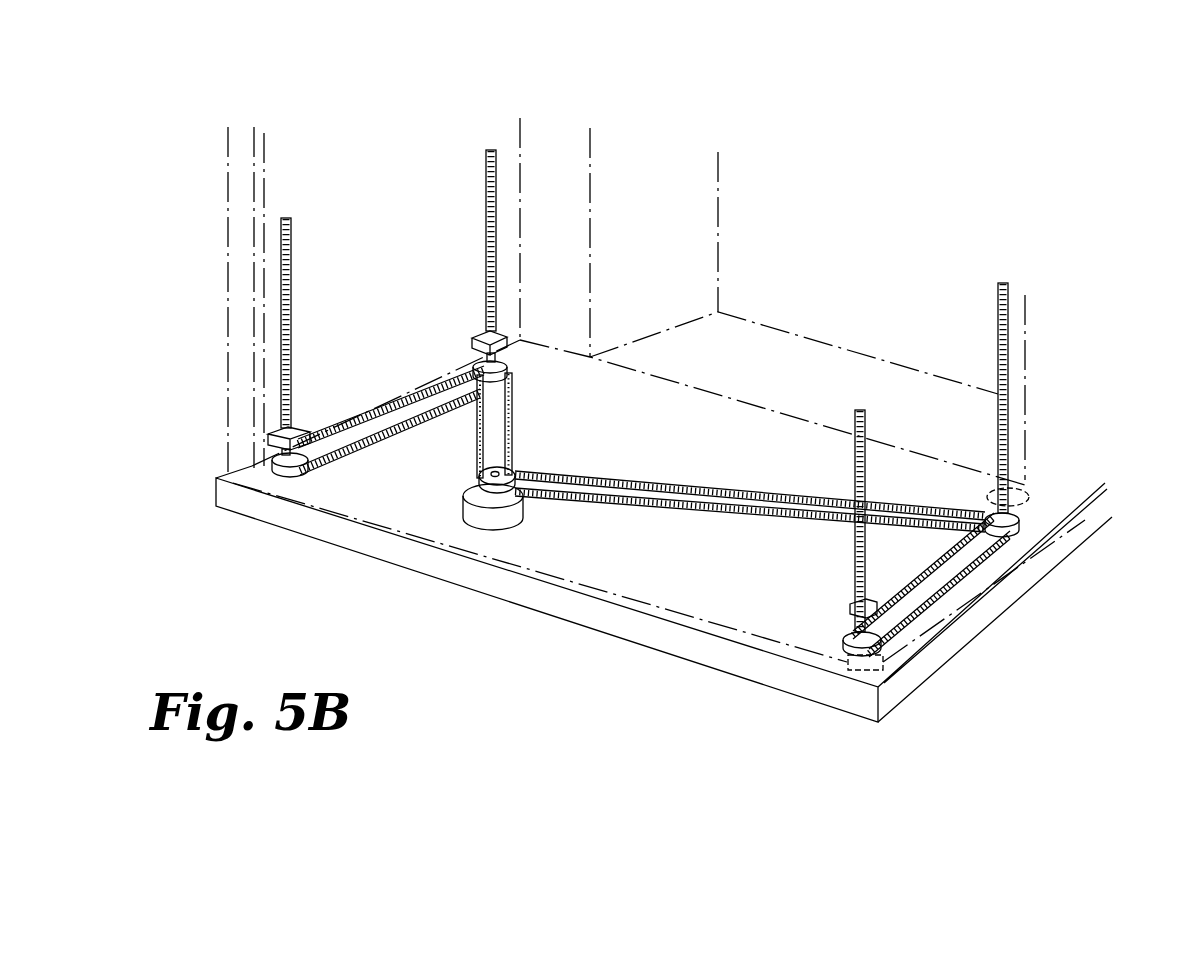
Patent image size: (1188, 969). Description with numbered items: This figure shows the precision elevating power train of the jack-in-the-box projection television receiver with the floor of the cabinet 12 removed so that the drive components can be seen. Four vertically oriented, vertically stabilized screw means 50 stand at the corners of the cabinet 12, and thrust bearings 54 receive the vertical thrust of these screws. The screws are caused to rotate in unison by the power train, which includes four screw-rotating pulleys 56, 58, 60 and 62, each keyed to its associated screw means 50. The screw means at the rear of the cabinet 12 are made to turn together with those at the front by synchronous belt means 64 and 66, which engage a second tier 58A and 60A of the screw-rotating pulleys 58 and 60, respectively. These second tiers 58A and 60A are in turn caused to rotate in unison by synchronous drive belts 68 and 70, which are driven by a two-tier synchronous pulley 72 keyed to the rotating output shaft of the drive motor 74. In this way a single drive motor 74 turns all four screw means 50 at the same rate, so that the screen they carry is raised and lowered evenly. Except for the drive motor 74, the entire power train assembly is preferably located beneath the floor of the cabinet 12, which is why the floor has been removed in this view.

The cabinet means 12 is at (228, 283).
The screw means 50 is at (486, 246).
The thrust bearings 54 is at (483, 335).
The screw-rotating pulley 56 is at (290, 463).
The screw-rotating pulley 58 is at (526, 380).
The second tier of screw rotating pulley 58A is at (513, 365).
The screw-rotating pulley 60 is at (974, 503).
The second tier of screw rotating pulley 60A is at (993, 512).
The screw-rotating pulley 62 is at (848, 638).
The synchronous belt means 64 is at (410, 393).
The synchronous belt means 66 is at (968, 567).
The synchronous drive belt 68 is at (515, 428).
The synchronous drive belt 70 is at (745, 494).
The two-tier synchronous pulley 72 is at (479, 472).
The drive motor 74 is at (520, 518).